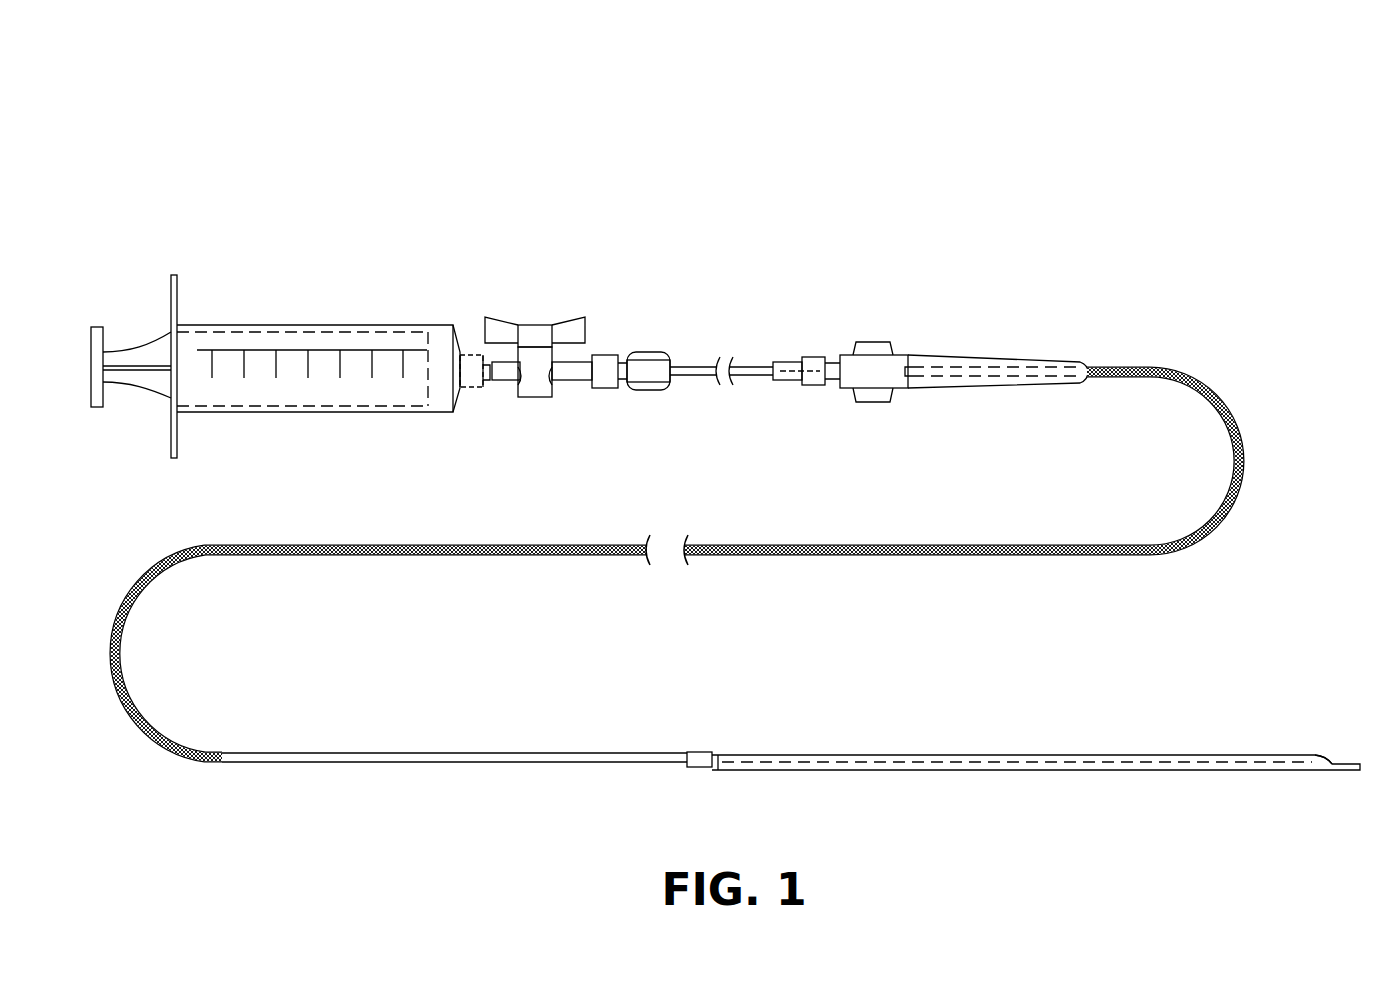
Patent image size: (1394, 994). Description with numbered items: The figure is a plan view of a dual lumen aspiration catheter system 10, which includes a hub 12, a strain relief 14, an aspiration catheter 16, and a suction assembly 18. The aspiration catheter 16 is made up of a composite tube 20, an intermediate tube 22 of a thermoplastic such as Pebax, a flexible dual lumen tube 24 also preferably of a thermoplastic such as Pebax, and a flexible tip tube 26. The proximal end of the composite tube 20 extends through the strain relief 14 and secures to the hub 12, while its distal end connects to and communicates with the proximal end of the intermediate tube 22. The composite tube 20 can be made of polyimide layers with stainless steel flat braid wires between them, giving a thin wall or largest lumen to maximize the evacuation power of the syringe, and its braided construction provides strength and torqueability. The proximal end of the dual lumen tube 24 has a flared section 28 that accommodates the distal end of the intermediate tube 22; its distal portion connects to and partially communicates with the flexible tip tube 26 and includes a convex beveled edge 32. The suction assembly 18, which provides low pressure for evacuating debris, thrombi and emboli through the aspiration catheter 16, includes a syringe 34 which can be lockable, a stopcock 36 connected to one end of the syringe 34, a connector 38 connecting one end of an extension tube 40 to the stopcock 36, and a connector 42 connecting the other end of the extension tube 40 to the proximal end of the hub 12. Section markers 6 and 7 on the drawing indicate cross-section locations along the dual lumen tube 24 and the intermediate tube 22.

The dual lumen aspiration catheter system 10 is at (1257, 113).
The hub 12 is at (875, 358).
The strain relief 14 is at (972, 380).
The aspiration catheter 16 is at (1362, 790).
The suction assembly 18 is at (83, 250).
The composite tube 20 is at (1222, 405).
The intermediate tube 22 is at (410, 752).
The flexible dual lumen tube 24 is at (882, 752).
The flexible tip tube 26 is at (1357, 770).
The flared section 28 is at (697, 758).
The convex beveled edge 32 is at (1322, 757).
The syringe 34 is at (357, 330).
The stopcock 36 is at (540, 333).
The connector 38 is at (645, 362).
The extension tube 40 is at (700, 373).
The connector 42 is at (815, 380).
The section line 6- 6 is at (1350, 683).
The section line 7- 7 is at (722, 682).